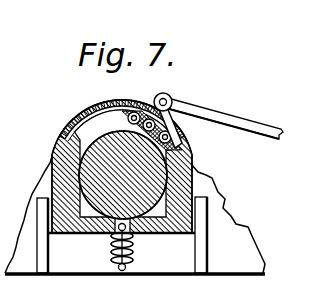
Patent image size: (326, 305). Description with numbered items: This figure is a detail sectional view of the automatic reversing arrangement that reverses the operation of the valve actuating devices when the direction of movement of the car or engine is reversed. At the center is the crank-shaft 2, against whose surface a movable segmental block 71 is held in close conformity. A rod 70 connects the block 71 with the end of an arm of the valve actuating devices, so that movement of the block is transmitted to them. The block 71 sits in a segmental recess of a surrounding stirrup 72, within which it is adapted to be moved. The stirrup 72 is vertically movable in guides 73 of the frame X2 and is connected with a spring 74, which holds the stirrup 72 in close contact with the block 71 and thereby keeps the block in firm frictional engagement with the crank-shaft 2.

The crank-shaft 2 is at (152, 170).
The rod 70 is at (236, 117).
The segmental block 71 is at (149, 150).
The stirrup 72 is at (73, 128).
The guides 73 is at (47, 253).
The spring 74 is at (136, 256).
The frame X2 is at (231, 231).